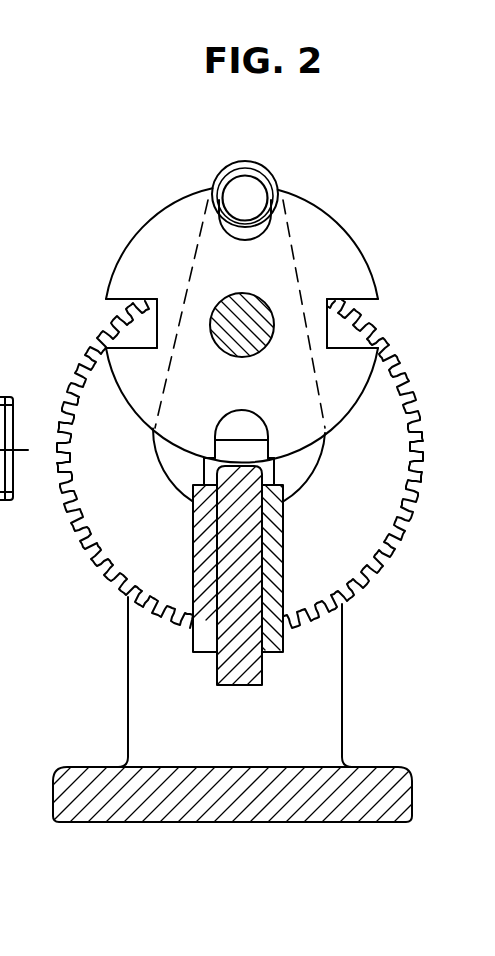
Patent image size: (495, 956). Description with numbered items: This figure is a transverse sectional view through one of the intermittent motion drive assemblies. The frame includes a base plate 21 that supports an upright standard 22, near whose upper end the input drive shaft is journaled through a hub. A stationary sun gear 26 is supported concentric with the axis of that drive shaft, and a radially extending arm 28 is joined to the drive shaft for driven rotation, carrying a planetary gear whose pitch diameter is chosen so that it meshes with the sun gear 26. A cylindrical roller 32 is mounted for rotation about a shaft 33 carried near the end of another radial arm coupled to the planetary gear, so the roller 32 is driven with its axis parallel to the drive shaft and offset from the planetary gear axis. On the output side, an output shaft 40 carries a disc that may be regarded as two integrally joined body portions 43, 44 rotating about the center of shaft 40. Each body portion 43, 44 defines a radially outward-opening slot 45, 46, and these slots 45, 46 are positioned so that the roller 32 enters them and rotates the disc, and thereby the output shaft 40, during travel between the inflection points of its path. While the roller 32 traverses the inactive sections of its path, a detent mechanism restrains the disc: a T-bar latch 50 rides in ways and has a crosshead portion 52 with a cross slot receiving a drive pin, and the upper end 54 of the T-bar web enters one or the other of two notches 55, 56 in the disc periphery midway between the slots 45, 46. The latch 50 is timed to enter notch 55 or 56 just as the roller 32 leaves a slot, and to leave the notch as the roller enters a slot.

The base plate 21 is at (72, 767).
The upright standard 22 is at (128, 722).
The stationary sun gear 26 is at (368, 544).
The radially extending arm 28 is at (298, 506).
The roller 32 is at (278, 182).
The shaft 33 is at (250, 183).
The output shaft 40 is at (221, 302).
The body portion 43 is at (364, 257).
The body portion 44 is at (205, 447).
The radial slot 45 is at (249, 236).
The radial slot 46 is at (250, 420).
The latch 50 is at (213, 675).
The crosshead portion 52 is at (193, 487).
The upper end of T-bar web 54 is at (273, 451).
The notch 55 is at (375, 302).
The notch 56 is at (114, 301).